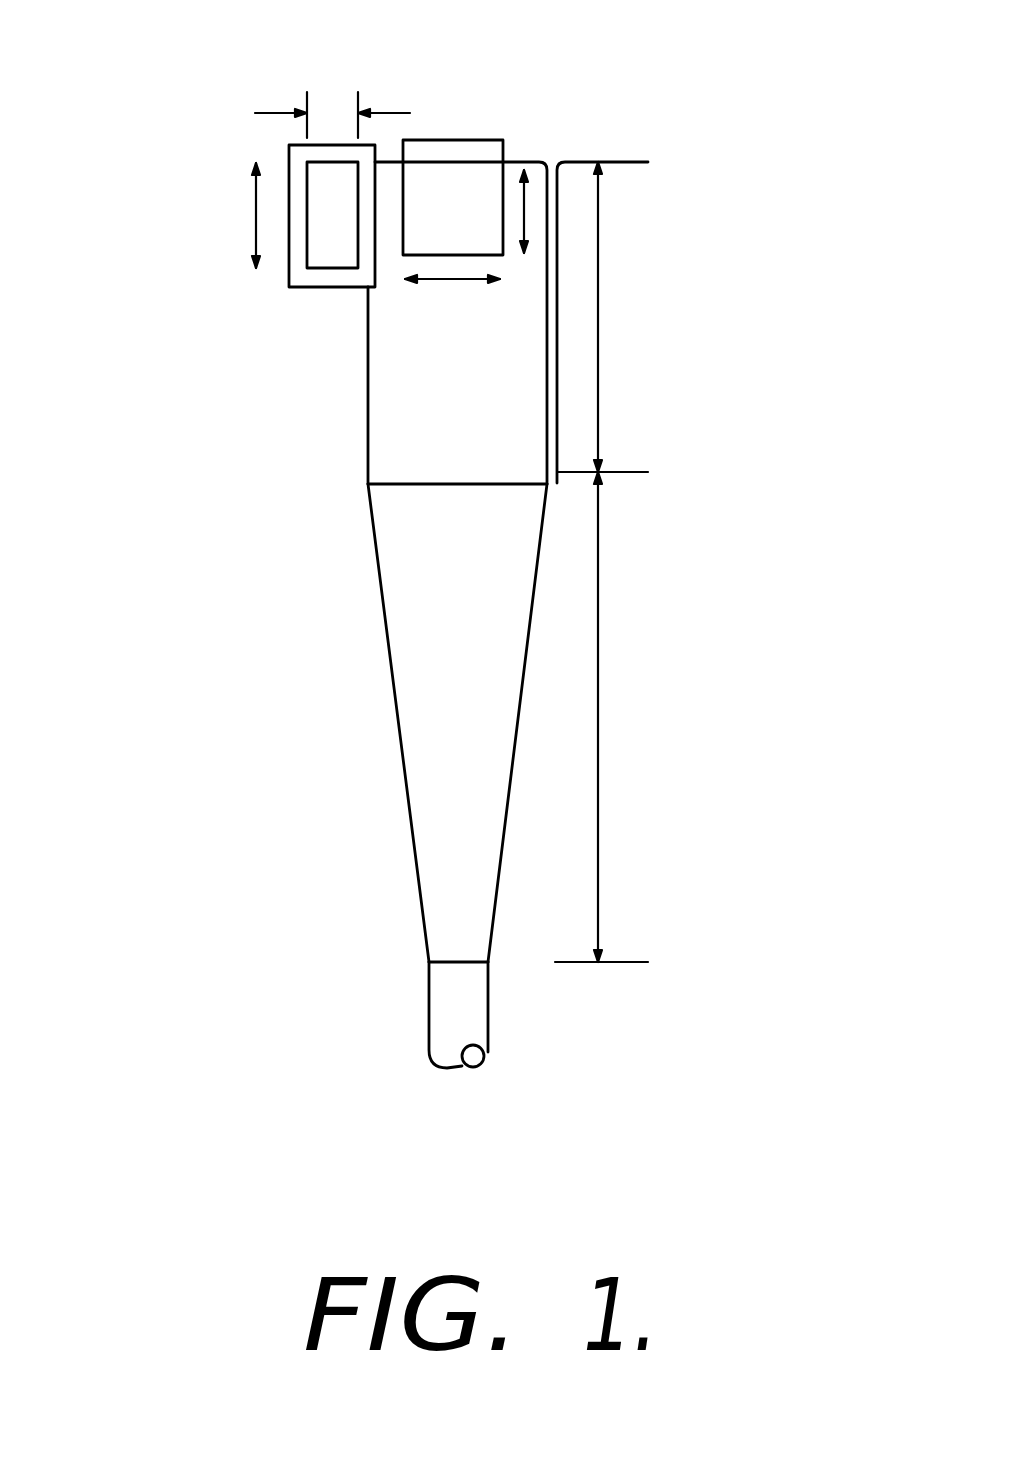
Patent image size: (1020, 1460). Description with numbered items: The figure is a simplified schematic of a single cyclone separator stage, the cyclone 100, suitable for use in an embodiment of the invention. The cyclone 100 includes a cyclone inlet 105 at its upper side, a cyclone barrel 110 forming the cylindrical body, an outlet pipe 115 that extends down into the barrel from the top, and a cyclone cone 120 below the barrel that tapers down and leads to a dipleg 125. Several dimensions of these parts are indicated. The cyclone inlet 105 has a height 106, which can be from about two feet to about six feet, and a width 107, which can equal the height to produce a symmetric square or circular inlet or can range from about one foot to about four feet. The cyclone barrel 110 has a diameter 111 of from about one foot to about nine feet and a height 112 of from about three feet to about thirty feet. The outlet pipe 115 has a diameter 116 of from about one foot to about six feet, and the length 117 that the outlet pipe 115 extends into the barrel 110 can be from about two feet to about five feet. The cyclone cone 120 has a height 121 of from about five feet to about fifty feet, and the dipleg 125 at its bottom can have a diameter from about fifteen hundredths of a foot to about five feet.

The cyclone 100 is at (428, 545).
The cyclone inlet 105 is at (290, 155).
The height of cyclone inlet 106 is at (256, 215).
The width of cyclone inlet 107 is at (388, 110).
The cyclone barrel 110 is at (547, 412).
The diameter of cyclone barrel 111 is at (412, 415).
The height of cyclone barrel 112 is at (598, 348).
The outlet pipe 115 is at (527, 123).
The diameter of outlet pipe 116 is at (447, 282).
The length outlet pipe extends into barrel 117 is at (527, 212).
The cyclone cone 120 is at (405, 776).
The height of cyclone cone 121 is at (598, 685).
The dipleg 125 is at (488, 1013).